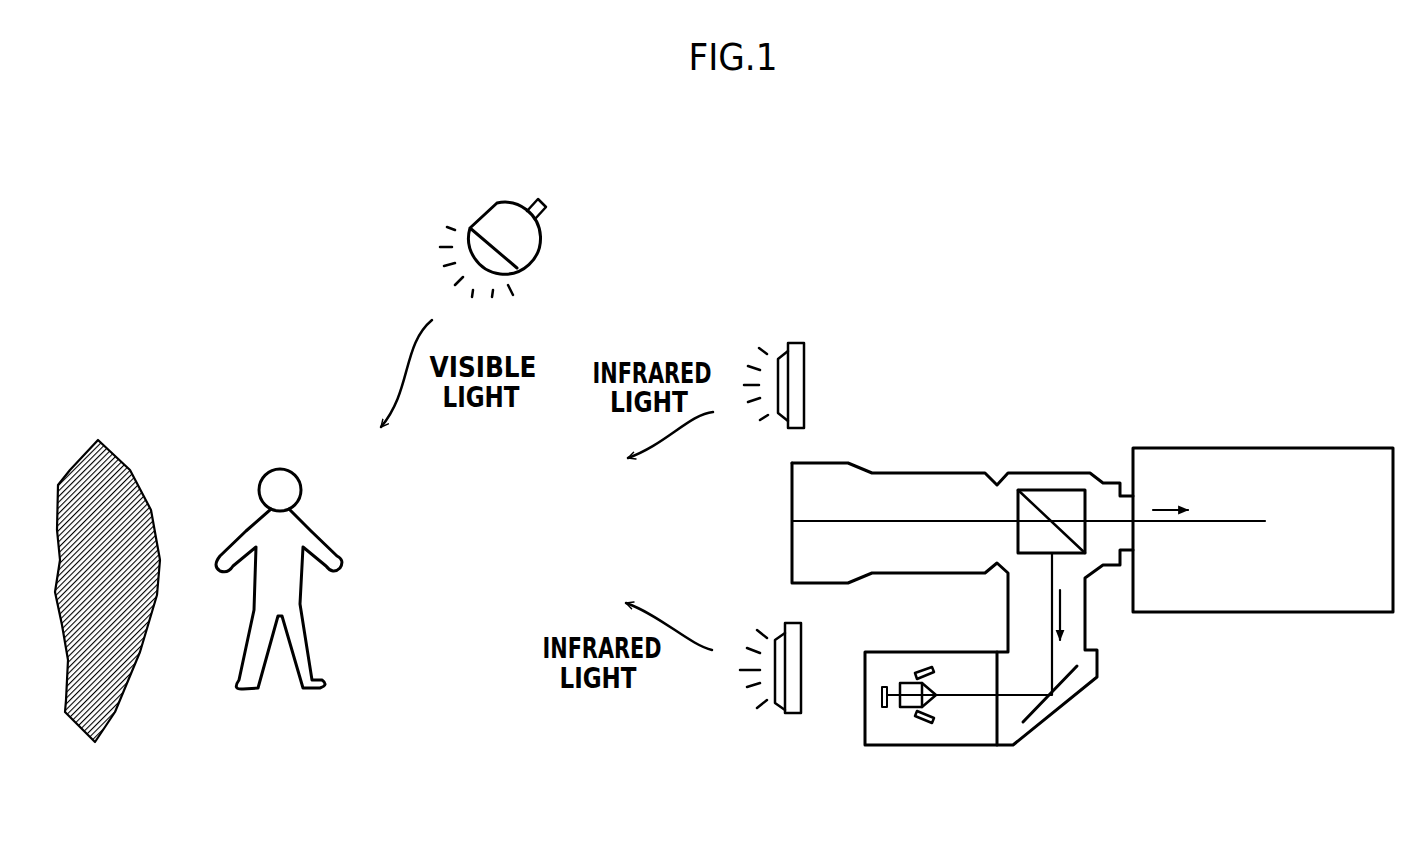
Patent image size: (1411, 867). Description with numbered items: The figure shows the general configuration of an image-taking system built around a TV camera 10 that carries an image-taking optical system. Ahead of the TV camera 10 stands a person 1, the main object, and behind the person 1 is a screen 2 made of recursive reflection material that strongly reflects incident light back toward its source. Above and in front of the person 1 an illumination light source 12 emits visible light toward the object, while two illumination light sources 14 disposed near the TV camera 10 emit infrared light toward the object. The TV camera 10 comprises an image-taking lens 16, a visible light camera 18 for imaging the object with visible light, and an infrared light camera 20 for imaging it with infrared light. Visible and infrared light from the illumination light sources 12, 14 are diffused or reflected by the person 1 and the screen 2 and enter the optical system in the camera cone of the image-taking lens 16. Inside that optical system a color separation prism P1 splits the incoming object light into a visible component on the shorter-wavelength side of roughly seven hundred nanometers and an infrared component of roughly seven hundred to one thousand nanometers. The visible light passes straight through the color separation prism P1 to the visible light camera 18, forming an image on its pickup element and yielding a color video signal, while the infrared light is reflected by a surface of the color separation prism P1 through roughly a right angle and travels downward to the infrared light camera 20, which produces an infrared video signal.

The person 1 is at (297, 622).
The screen 2 is at (113, 718).
The TV camera 10 is at (1092, 560).
The illumination light source 12 is at (497, 210).
The illumination light source 14 is at (796, 343).
The image-taking lens 16 is at (934, 461).
The visible light camera 18 is at (1283, 447).
The infrared light camera 20 is at (993, 768).
The color separation prism P1 is at (1055, 495).